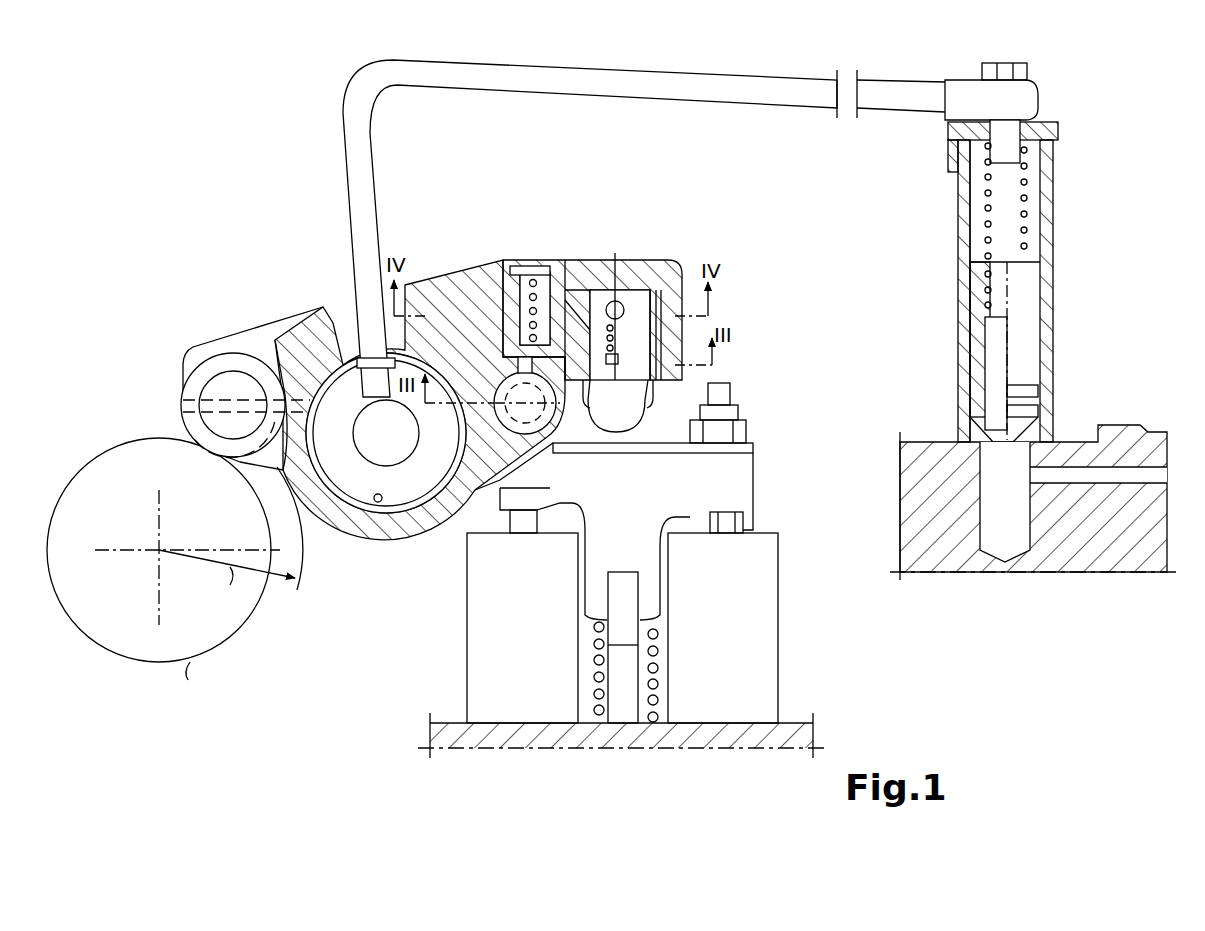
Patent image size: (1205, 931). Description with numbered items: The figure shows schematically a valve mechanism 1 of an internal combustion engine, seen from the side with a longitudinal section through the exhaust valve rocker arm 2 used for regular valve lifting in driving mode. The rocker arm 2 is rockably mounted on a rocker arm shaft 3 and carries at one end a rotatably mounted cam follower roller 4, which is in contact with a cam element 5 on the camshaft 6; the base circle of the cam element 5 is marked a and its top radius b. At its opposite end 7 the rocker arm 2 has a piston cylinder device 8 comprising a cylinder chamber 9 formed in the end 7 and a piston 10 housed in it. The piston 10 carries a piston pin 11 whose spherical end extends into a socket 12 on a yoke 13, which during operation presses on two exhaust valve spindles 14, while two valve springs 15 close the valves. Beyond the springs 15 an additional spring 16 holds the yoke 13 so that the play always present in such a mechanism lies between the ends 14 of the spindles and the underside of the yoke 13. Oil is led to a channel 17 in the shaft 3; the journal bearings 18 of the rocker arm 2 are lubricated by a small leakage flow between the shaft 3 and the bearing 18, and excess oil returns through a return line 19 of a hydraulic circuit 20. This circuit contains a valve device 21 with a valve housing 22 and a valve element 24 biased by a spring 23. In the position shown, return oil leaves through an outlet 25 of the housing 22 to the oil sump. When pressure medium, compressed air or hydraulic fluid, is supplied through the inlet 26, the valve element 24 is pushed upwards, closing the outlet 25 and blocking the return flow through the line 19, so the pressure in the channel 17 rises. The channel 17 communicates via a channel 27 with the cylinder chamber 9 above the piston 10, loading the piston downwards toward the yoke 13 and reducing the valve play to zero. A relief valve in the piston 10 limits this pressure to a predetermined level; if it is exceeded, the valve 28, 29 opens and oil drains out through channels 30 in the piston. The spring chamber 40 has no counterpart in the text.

The valve mechanism 1 is at (430, 243).
The exhaust valve rocker arm 2 is at (290, 325).
The rocker arm shaft 3 is at (360, 486).
The cam follower roller 4 is at (195, 350).
The cam element 5 is at (238, 628).
The camshaft 6 is at (250, 610).
The rocker arm end 7 is at (669, 262).
The piston cylinder device 8 is at (651, 384).
The cylinder chamber 9 is at (587, 280).
The piston 10 is at (615, 253).
The piston pin 11 is at (632, 425).
The socket 12 is at (603, 438).
The yoke 13 is at (752, 458).
The exhaust valve spindles 14 is at (510, 522).
The valve springs 15 is at (467, 613).
The additional spring 16 is at (660, 697).
The channel 17 is at (365, 458).
The journal bearings 18 is at (377, 503).
The return line 19 is at (706, 82).
The hydraulic circuit 20 is at (1064, 121).
The valve device 21 is at (1058, 190).
The valve housing 22 is at (1054, 209).
The spring 23 is at (1028, 231).
The valve element 24 is at (1030, 333).
The outlet 25 is at (1053, 263).
The inlet 26 is at (1165, 479).
The channel 27 is at (527, 395).
The relief valve 28 is at (624, 311).
The relief valve 29 is at (614, 338).
The channels 30 is at (606, 374).
The spring chamber 40 is at (546, 260).